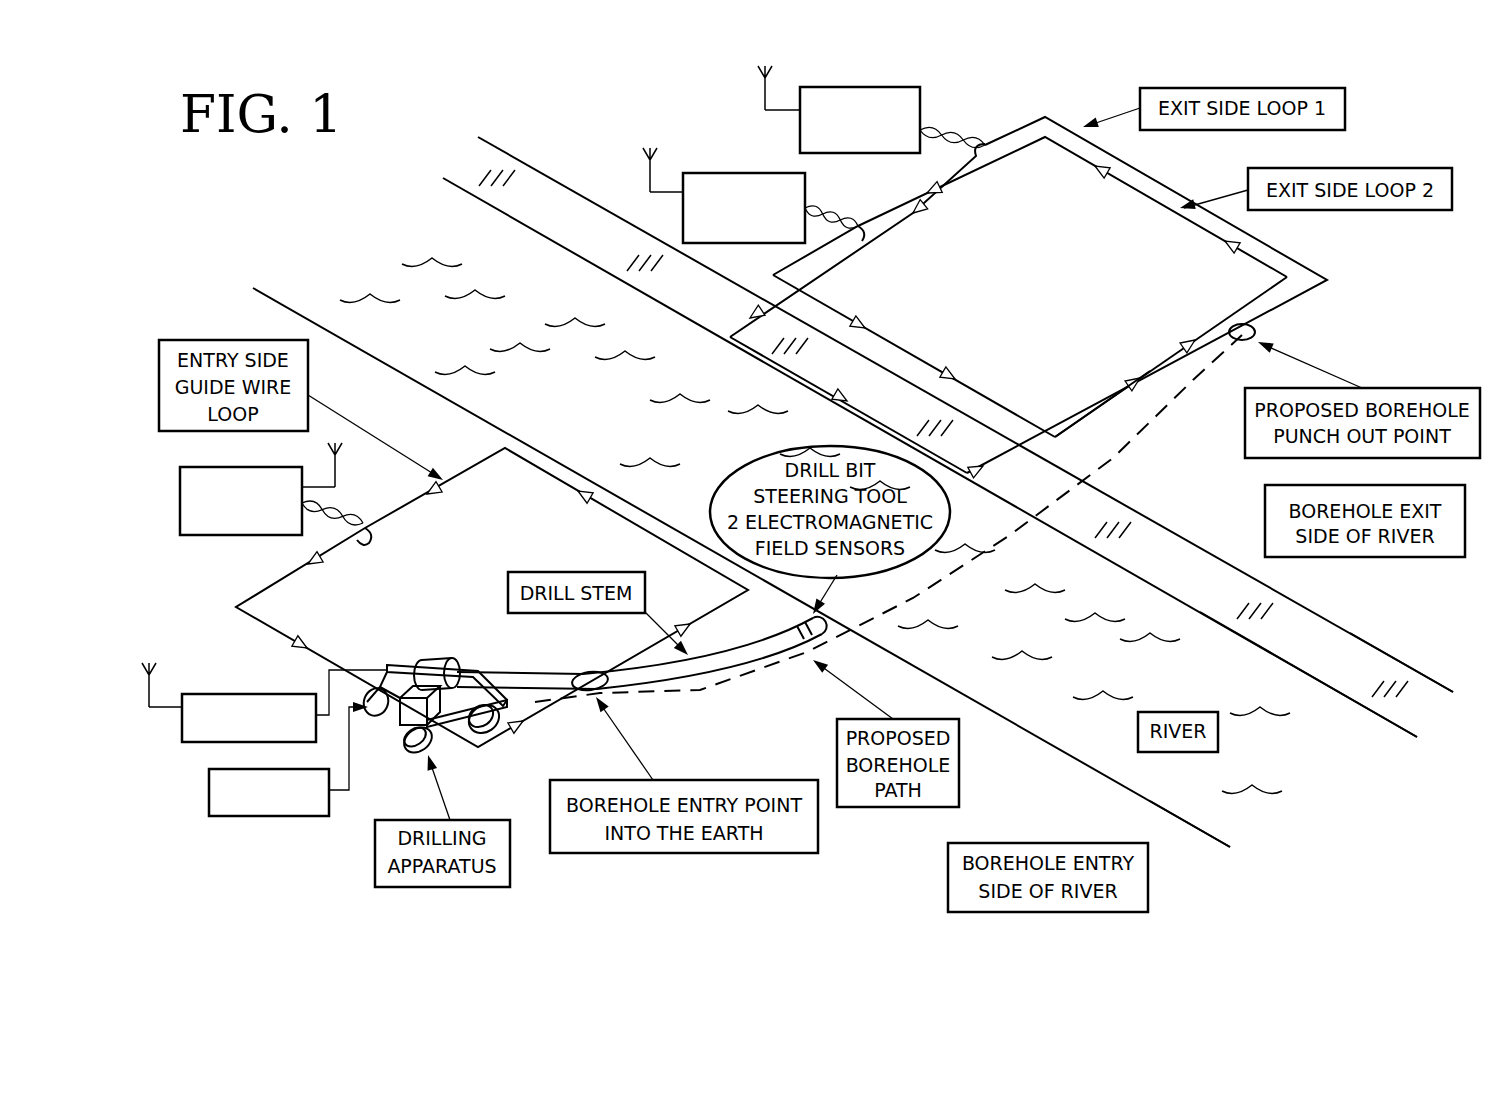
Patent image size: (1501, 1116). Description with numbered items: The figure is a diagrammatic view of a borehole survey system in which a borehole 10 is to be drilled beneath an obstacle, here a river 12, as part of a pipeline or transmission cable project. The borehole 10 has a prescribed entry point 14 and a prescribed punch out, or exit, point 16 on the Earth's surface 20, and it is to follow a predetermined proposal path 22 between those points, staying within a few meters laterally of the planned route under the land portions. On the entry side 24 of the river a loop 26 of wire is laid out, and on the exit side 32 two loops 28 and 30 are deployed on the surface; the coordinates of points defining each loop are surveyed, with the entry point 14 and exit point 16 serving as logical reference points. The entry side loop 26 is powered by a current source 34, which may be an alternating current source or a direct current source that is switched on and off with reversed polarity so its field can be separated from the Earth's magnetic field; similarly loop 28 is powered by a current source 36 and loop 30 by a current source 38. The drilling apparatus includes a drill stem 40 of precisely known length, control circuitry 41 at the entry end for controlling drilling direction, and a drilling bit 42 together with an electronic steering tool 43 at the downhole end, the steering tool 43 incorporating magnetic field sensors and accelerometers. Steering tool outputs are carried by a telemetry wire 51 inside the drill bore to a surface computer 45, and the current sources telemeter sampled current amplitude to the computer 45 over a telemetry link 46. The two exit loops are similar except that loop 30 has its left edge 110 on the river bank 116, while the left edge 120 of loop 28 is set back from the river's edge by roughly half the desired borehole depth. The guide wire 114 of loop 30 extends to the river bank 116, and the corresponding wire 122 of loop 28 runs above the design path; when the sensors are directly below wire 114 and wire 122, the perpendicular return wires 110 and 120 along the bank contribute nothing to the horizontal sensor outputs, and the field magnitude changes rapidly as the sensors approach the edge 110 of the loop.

The borehole 10 is at (730, 648).
The river 12 is at (1088, 766).
The entry point 14 is at (593, 672).
The punch out point 16 is at (1256, 331).
The Earth's surface 20 is at (1231, 523).
The proposal path 22 is at (1110, 470).
The entry side 24 is at (1198, 853).
The entry side loop 26 is at (260, 592).
The exit side loop 28 is at (1302, 254).
The exit side loop 30 is at (1253, 293).
The exit side 32 is at (1466, 693).
The current source 34 is at (235, 535).
The current source 36 is at (800, 132).
The current source 38 is at (715, 172).
The drill stem 40 is at (755, 655).
The control circuitry 41 is at (280, 816).
The drilling bit 42 is at (825, 620).
The steering tool 43 is at (800, 632).
The computer 45 is at (244, 694).
The telemetry link 46 is at (763, 102).
The telemetry wire 51 is at (355, 667).
The edge of loop 110 is at (870, 413).
The guide wire 114 is at (1070, 425).
The river bank 116 is at (528, 190).
The left edge of loop 120 is at (820, 297).
The wire of loop 122 is at (1097, 410).